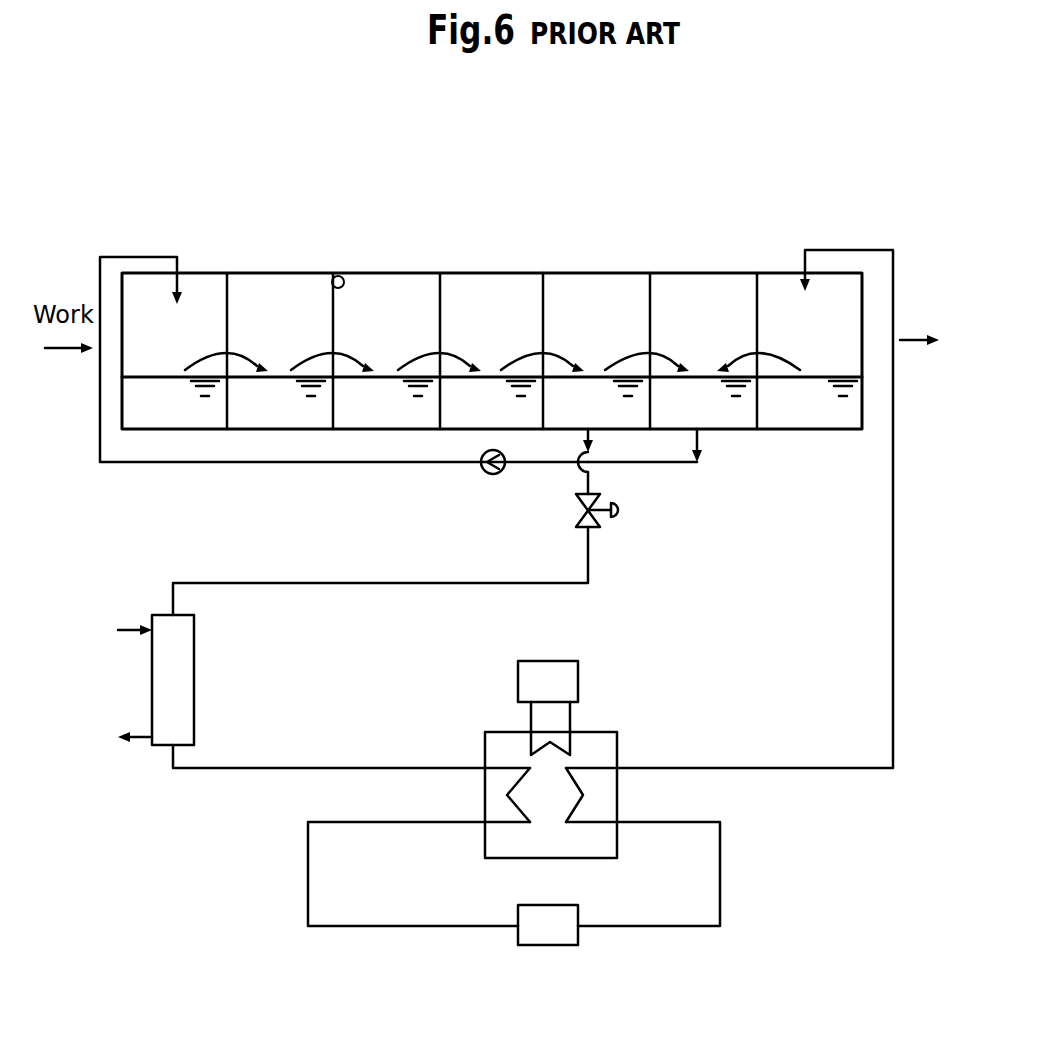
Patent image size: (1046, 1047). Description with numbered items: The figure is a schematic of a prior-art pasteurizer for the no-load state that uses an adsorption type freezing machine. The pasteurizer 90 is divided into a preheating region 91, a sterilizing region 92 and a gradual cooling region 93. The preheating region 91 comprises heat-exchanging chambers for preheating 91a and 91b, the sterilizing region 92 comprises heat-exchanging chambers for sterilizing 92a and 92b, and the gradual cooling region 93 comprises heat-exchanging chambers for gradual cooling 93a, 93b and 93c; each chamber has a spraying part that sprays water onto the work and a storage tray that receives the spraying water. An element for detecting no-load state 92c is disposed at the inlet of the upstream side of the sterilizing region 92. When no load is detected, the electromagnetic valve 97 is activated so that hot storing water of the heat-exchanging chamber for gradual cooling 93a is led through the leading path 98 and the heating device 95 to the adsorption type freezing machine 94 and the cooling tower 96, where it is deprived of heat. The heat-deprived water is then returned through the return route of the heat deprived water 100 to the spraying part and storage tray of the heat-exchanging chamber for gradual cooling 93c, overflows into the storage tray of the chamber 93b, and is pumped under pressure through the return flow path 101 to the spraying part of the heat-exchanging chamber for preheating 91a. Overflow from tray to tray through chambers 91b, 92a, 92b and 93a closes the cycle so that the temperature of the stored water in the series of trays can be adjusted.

The pasteurizer 90 is at (787, 182).
The preheating region 91 is at (308, 242).
The heat-exchanging chamber for preheating 91a is at (199, 350).
The heat-exchanging chamber for preheating 91b is at (314, 350).
The sterilizing region 92 is at (519, 242).
The heat-exchanging chamber for sterilizing 92a is at (422, 350).
The heat-exchanging chamber for sterilizing 92b is at (525, 349).
The element for detecting no-load state 92c is at (339, 275).
The gradual cooling region 93 is at (848, 242).
The heat-exchanging chamber for gradual cooling 93a is at (629, 349).
The heat-exchanging chamber for gradual cooling 93b is at (736, 349).
The heat-exchanging chamber for gradual cooling 93c is at (819, 348).
The adsorption type freezing machine 94 is at (607, 686).
The heating device 95 is at (195, 645).
The cooling tower 96 is at (580, 913).
The electromagnetic valve 97 is at (618, 518).
The leading path 98 is at (367, 583).
The return route of the heat deprived water 100 is at (820, 768).
The return flow path 101 is at (667, 463).